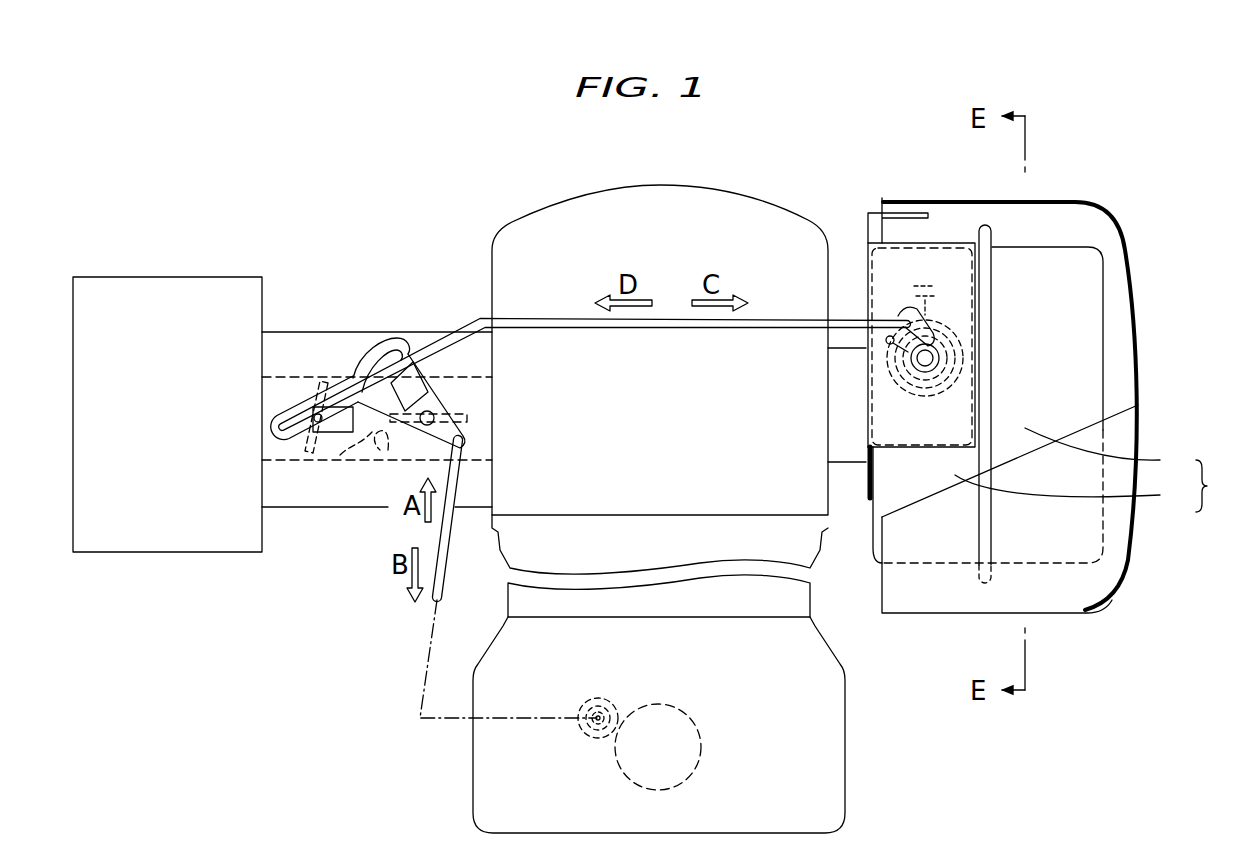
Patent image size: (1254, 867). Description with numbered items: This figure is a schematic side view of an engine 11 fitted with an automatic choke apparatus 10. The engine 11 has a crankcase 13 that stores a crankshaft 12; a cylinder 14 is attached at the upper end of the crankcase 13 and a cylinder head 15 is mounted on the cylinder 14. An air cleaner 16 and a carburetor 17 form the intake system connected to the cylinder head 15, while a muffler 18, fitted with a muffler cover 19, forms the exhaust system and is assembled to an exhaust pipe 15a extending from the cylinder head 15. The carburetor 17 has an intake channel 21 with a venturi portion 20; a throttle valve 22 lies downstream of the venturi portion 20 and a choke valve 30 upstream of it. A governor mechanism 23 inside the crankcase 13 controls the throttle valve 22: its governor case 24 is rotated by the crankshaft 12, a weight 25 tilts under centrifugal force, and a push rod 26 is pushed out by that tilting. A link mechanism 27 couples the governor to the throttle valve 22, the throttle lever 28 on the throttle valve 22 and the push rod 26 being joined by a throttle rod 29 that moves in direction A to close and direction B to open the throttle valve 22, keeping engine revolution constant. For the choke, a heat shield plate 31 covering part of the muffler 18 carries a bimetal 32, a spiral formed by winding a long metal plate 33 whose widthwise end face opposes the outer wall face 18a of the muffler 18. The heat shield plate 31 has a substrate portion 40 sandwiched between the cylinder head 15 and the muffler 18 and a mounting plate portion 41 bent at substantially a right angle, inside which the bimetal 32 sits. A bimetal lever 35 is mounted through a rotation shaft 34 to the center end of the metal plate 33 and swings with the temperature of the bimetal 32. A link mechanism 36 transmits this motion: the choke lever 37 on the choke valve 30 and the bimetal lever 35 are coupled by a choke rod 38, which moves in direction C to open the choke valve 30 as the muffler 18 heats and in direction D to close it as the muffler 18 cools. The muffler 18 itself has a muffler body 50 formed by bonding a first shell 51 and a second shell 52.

The automatic choke apparatus 10 is at (817, 187).
The engine 11 is at (240, 190).
The crankshaft 12 is at (700, 718).
The crankcase 13 is at (835, 748).
The cylinder 14 is at (806, 600).
The cylinder head 15 is at (550, 212).
The exhaust pipe 15a is at (850, 455).
The air cleaner 16 is at (145, 280).
The carburetor 17 is at (323, 330).
The muffler 18 is at (1069, 238).
The outer wall face 18a is at (900, 433).
The muffler cover 19 is at (1097, 612).
The venturi portion 20 is at (388, 450).
The intake channel 21 is at (340, 455).
The throttle valve 22 is at (456, 415).
The governor mechanism 23 is at (580, 700).
The governor case 24 is at (602, 704).
The weight 25 is at (622, 703).
The push rod 26 is at (600, 740).
The link mechanism 27 is at (416, 634).
The throttle lever 28 is at (400, 340).
The throttle rod 29 is at (440, 572).
The choke valve 30 is at (307, 450).
The heat shield plate 31 is at (872, 206).
The bimetal 32 is at (965, 335).
The metal plate 33 is at (945, 320).
The rotation shaft 34 is at (915, 360).
The bimetal lever 35 is at (907, 313).
The link mechanism 36 is at (682, 344).
The choke lever 37 is at (282, 405).
The choke rod 38 is at (520, 320).
The substrate portion 40 is at (862, 303).
The mounting plate portion 41 is at (928, 428).
The muffler body 50 is at (1218, 486).
The first shell 51 is at (1112, 455).
The second shell 52 is at (1077, 495).